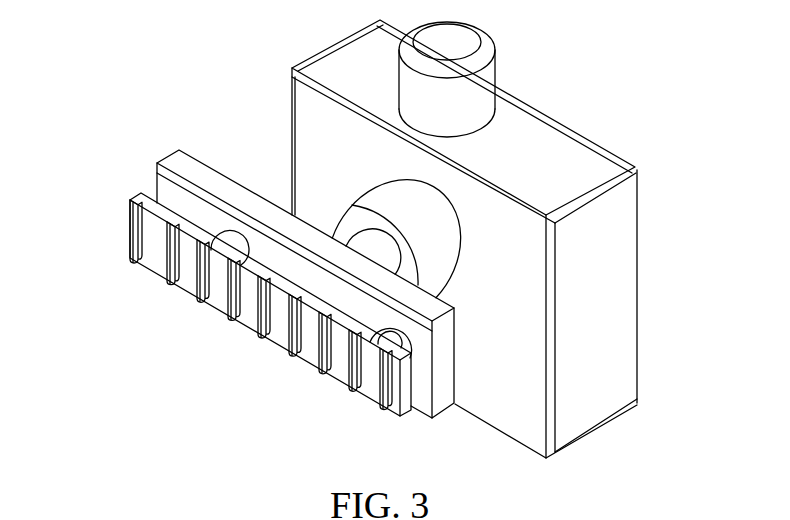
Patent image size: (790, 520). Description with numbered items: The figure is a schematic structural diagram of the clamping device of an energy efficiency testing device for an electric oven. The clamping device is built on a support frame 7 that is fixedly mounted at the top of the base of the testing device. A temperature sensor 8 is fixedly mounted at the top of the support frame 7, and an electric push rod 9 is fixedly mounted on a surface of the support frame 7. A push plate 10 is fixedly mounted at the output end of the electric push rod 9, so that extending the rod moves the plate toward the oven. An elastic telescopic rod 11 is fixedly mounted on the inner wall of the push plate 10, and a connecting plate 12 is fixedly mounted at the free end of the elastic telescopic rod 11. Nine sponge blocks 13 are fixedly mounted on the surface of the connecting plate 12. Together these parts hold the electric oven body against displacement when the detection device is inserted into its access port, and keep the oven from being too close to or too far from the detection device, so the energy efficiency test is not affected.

The support frame 7 is at (627, 300).
The temperature sensor 8 is at (450, 92).
The electric push rod 9 is at (425, 242).
The push plate 10 is at (190, 170).
The elastic telescopic rod 11 is at (222, 233).
The connecting plate 12 is at (160, 238).
The sponge block 13 is at (140, 254).